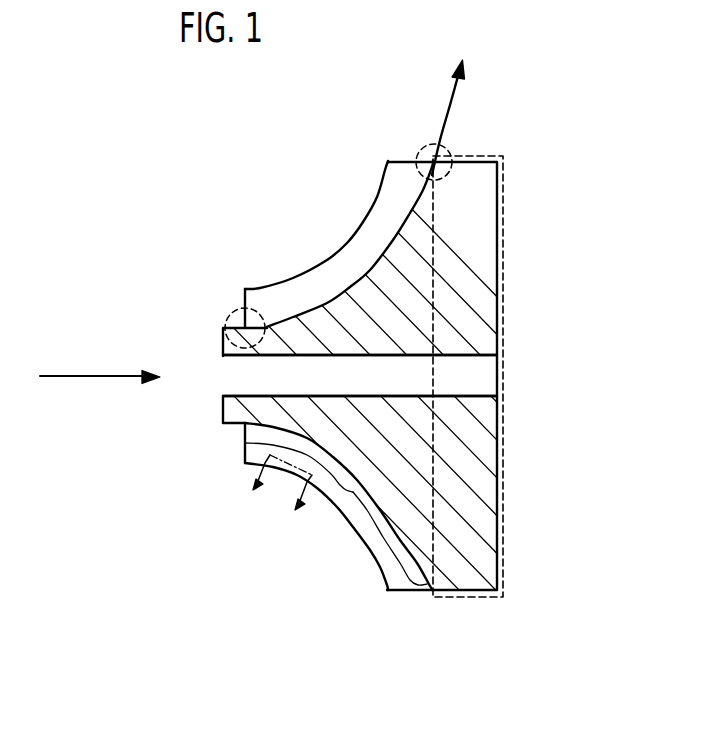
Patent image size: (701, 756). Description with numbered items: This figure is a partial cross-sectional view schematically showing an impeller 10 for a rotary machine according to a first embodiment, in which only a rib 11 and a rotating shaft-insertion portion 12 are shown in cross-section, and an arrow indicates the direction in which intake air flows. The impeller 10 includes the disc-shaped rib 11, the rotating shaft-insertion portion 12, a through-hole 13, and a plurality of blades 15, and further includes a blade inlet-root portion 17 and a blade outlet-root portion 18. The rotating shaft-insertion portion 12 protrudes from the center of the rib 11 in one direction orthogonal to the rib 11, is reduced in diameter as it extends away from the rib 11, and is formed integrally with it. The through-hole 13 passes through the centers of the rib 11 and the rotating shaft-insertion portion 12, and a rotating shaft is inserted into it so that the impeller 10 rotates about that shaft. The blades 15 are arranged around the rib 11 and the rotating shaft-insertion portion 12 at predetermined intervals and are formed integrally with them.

The impeller for a rotary machine 10 is at (34, 126).
The rib 11 is at (468, 598).
The rotating shaft-insertion portion 12 is at (347, 490).
The through-hole 13 is at (483, 378).
The blades 15 is at (322, 267).
The blade inlet-root portion 17 is at (237, 313).
The blade outlet-root portion 18 is at (428, 142).